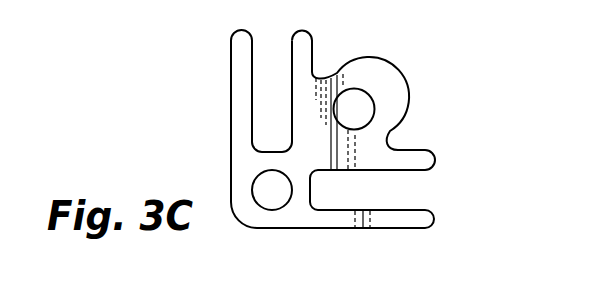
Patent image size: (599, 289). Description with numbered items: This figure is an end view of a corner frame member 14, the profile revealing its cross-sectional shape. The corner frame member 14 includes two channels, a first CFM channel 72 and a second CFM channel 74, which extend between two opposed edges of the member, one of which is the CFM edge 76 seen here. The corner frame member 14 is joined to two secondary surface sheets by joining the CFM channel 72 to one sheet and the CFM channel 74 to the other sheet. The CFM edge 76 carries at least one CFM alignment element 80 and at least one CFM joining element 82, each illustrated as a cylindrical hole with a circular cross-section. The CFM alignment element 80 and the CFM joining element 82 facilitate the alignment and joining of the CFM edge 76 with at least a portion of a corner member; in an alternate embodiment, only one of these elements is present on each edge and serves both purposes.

The corner frame member 14 is at (446, 93).
The CFM channel 72 is at (439, 188).
The CFM channel 74 is at (274, 34).
The CFM edge 76 is at (231, 102).
The CFM alignment element 80 is at (258, 188).
The CFM joining element 82 is at (362, 105).